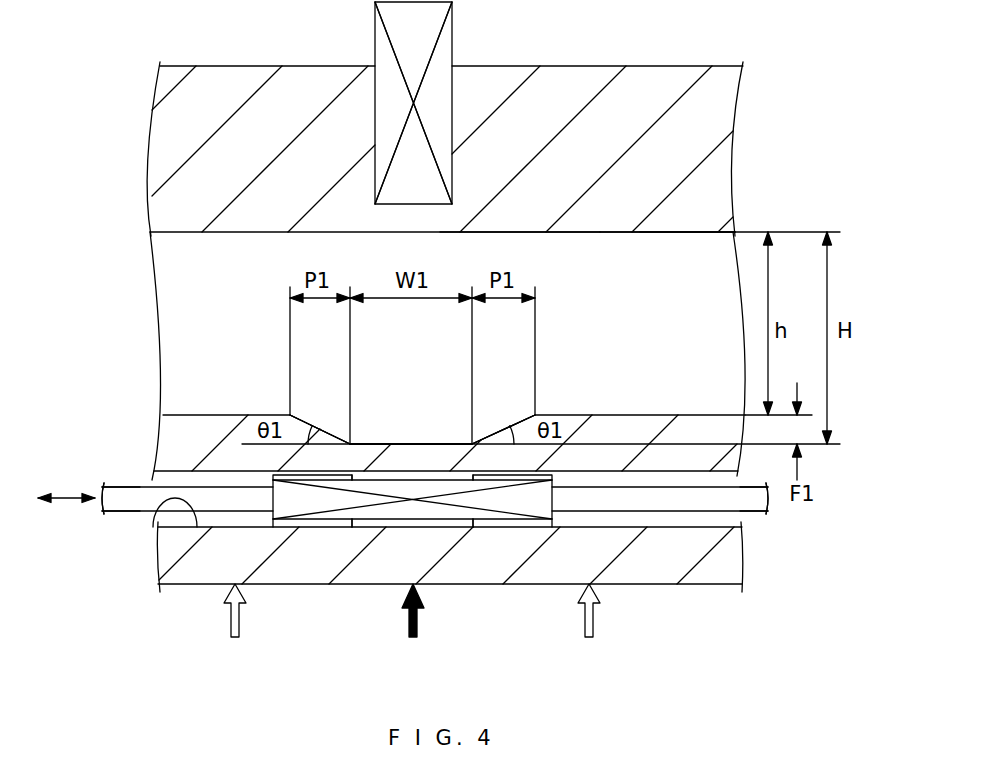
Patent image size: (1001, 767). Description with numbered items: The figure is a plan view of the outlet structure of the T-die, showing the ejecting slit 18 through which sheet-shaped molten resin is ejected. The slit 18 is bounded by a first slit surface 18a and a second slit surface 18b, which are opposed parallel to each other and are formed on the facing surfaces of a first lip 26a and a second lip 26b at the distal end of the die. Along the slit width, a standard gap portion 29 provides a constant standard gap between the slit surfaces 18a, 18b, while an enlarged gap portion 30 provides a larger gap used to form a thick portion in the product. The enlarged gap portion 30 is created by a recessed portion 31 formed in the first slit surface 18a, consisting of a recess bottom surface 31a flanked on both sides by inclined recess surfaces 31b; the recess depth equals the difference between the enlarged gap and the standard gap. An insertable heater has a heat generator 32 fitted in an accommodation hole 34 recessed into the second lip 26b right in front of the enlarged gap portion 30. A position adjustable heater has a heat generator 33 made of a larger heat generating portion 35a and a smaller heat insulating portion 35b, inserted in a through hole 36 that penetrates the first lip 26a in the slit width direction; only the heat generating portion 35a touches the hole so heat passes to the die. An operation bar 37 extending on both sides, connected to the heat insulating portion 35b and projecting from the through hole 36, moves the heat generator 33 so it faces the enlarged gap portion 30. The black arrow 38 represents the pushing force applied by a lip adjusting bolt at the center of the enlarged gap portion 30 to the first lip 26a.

The ejecting slit 18 is at (165, 291).
The first slit surface 18a is at (674, 415).
The second slit surface 18b is at (690, 233).
The first lip 26a is at (724, 562).
The second lip 26b is at (722, 120).
The standard gap portion 29 is at (652, 230).
The enlarged gap portion 30 is at (519, 230).
The recessed portion 31 is at (315, 377).
The recess bottom surface 31a is at (412, 444).
The inclined recess surfaces 31b is at (312, 428).
The heat generator 32 is at (375, 30).
The heat generator 33 is at (444, 541).
The accommodation hole 34 is at (438, 82).
The heat generating portion 35a is at (370, 528).
The heat insulating portion 35b is at (293, 527).
The through hole 36 is at (160, 522).
The operation bar 37 is at (133, 486).
The arrow 38 is at (223, 622).